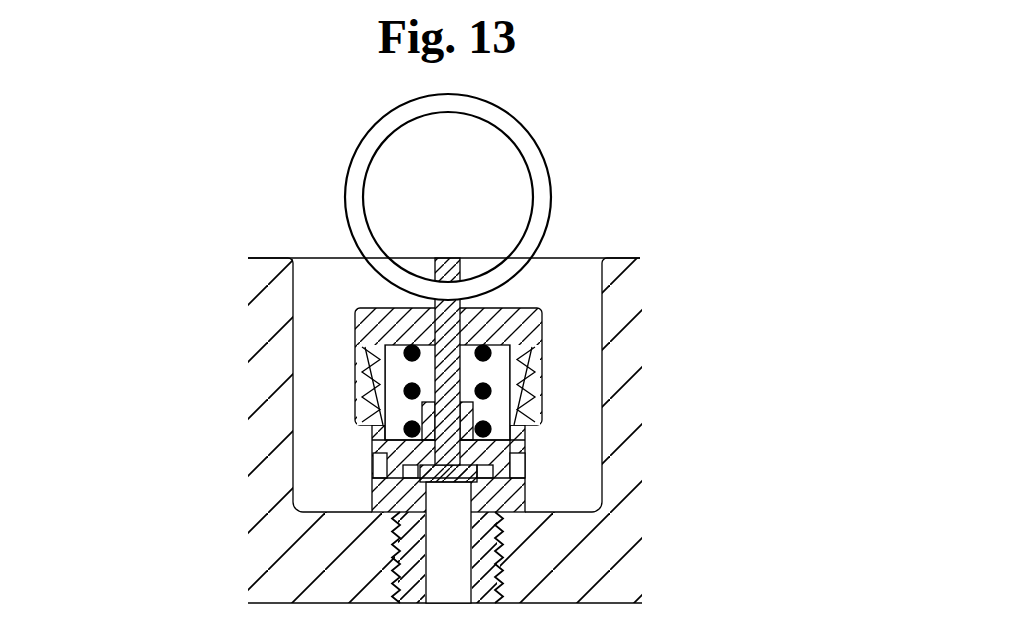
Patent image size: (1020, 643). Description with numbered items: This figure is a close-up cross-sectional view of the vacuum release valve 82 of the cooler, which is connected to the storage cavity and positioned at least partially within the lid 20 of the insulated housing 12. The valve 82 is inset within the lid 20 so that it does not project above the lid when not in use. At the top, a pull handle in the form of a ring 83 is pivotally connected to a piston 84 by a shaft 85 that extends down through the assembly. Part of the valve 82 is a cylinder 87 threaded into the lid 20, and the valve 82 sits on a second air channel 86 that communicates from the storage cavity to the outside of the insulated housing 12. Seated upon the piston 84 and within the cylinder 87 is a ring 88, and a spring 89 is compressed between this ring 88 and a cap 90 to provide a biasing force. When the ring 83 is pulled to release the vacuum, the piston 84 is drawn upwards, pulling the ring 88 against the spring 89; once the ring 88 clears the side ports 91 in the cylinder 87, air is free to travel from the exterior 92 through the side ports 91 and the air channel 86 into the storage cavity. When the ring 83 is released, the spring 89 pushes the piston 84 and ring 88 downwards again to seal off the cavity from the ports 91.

The insulated housing 12 is at (655, 618).
The lid 20 is at (635, 257).
The vacuum release valve 82 is at (432, 320).
The ring 83 is at (548, 182).
The piston 84 is at (447, 483).
The shaft 85 is at (462, 298).
The second air channel 86 is at (603, 372).
The cylinder 87 is at (527, 432).
The ring 88 is at (380, 447).
The spring 89 is at (400, 388).
The cap 90 is at (372, 306).
The side ports 91 is at (380, 477).
The exterior 92 is at (302, 220).